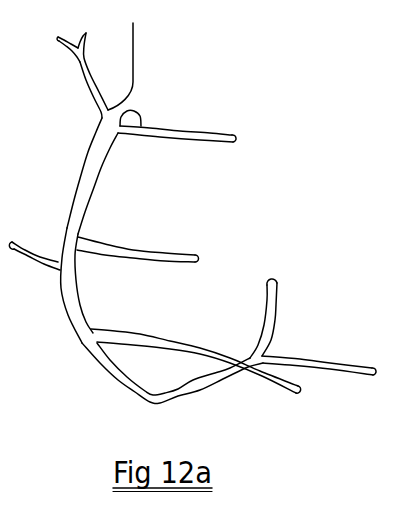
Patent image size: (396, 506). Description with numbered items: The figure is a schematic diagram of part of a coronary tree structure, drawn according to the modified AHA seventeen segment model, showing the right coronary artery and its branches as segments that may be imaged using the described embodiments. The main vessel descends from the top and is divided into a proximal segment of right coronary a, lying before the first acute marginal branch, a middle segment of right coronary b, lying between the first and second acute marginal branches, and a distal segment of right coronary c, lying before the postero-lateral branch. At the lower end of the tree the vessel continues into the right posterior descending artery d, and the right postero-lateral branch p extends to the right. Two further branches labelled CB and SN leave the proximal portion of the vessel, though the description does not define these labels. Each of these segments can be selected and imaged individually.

The conus branch CB is at (62, 75).
The sinus node branch SN is at (177, 143).
The proximal segment of right coronary a is at (90, 128).
The middle segment of right coronary b is at (154, 310).
The distal segment of right coronary c is at (172, 389).
The right posterior descending artery d is at (274, 318).
The right postero-lateral branch p is at (319, 352).